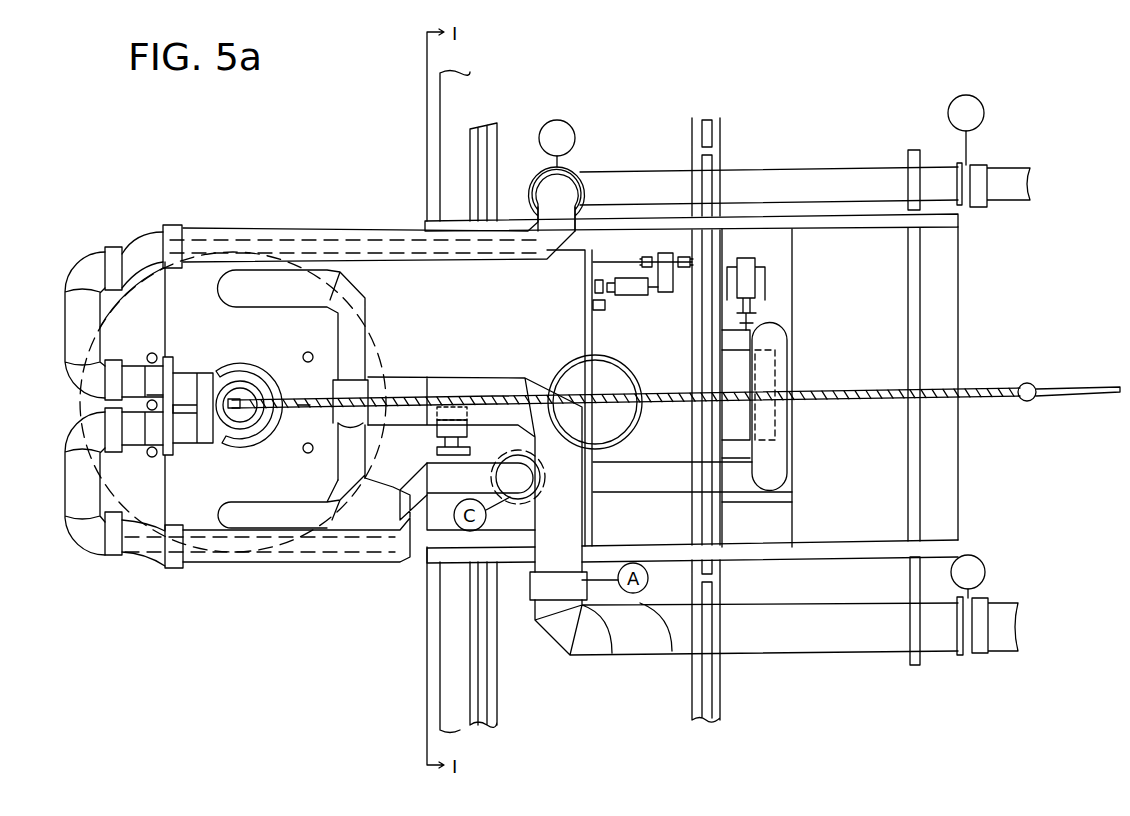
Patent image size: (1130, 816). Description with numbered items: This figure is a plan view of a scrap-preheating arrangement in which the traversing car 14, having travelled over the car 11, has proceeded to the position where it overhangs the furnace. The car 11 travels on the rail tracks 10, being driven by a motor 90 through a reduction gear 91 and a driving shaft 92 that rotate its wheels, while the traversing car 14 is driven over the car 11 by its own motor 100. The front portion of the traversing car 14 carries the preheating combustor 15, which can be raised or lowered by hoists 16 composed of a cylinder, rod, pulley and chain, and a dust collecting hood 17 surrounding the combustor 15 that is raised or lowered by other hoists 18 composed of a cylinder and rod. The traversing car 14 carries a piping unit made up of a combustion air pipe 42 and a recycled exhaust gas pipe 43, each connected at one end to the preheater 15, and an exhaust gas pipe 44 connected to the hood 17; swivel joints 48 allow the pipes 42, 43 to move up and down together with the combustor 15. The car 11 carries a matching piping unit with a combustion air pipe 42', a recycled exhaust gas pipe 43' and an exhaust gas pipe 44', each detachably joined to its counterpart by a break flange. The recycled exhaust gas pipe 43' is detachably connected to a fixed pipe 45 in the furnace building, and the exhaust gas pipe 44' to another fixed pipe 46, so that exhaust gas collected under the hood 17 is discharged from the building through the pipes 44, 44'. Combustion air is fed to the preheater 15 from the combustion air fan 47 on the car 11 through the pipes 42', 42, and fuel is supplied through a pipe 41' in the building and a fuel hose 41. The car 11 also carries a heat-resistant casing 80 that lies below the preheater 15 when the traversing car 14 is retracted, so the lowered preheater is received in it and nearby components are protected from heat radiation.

The rail tracks 10 is at (490, 127).
The car 11 is at (832, 212).
The traversing car 14 is at (382, 268).
The preheating combustor 15 is at (222, 375).
The hoists 16 is at (147, 395).
The dust collecting hood 17 is at (86, 410).
The hoists 18 is at (150, 353).
The fuel hose 41 is at (626, 384).
The fuel pipe 41' is at (1069, 377).
The combustion air pipe 42 is at (219, 504).
The combustion air pipe 42' is at (692, 493).
The recycled exhaust gas pipe 43 is at (301, 297).
The recycled exhaust gas pipe 43' is at (744, 175).
The exhaust gas pipe 44 is at (477, 468).
The exhaust gas pipe 44' is at (746, 641).
The fixed pipe 45 is at (1016, 172).
The fixed pipe 46 is at (1012, 610).
The combustion air fan 47 is at (766, 330).
The swivel joint 48 is at (170, 222).
The heat-resistant casing 80 is at (628, 372).
The motor 90 is at (630, 296).
The reduction gear 91 is at (668, 293).
The driving shaft 92 is at (668, 254).
The motor 100 is at (435, 430).